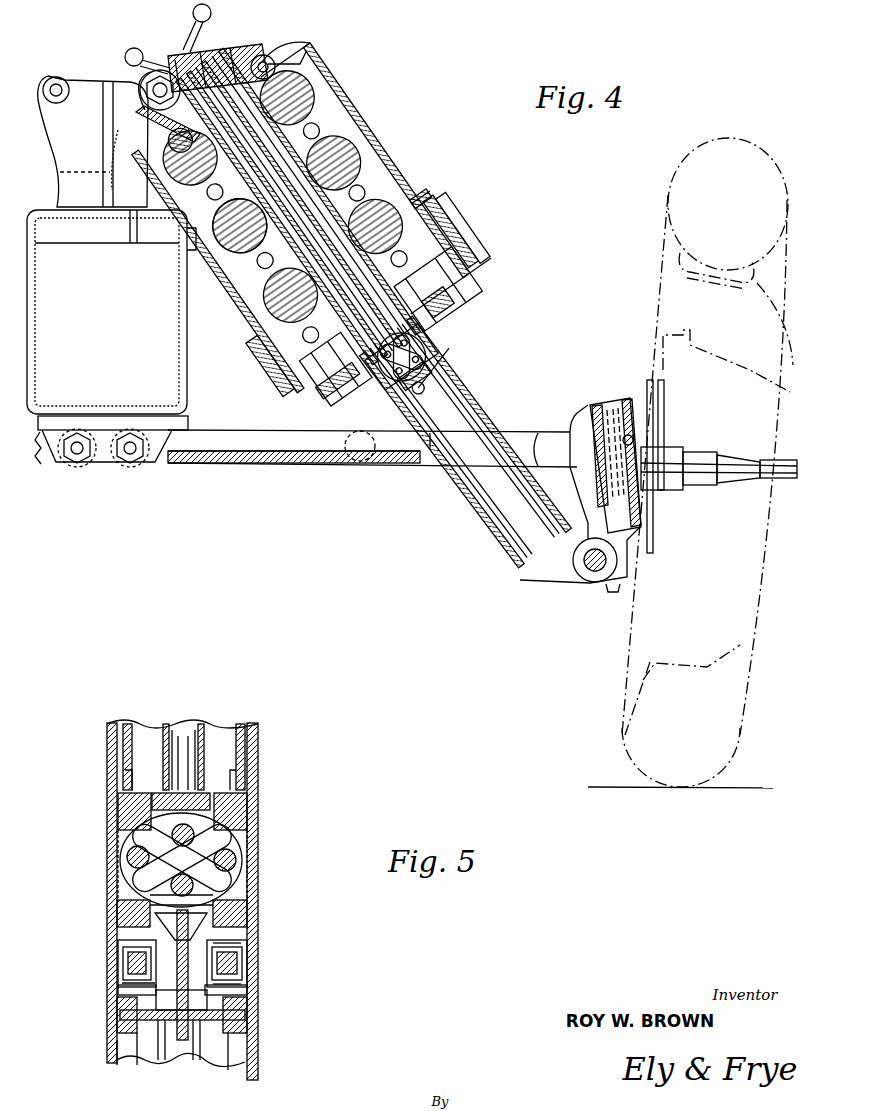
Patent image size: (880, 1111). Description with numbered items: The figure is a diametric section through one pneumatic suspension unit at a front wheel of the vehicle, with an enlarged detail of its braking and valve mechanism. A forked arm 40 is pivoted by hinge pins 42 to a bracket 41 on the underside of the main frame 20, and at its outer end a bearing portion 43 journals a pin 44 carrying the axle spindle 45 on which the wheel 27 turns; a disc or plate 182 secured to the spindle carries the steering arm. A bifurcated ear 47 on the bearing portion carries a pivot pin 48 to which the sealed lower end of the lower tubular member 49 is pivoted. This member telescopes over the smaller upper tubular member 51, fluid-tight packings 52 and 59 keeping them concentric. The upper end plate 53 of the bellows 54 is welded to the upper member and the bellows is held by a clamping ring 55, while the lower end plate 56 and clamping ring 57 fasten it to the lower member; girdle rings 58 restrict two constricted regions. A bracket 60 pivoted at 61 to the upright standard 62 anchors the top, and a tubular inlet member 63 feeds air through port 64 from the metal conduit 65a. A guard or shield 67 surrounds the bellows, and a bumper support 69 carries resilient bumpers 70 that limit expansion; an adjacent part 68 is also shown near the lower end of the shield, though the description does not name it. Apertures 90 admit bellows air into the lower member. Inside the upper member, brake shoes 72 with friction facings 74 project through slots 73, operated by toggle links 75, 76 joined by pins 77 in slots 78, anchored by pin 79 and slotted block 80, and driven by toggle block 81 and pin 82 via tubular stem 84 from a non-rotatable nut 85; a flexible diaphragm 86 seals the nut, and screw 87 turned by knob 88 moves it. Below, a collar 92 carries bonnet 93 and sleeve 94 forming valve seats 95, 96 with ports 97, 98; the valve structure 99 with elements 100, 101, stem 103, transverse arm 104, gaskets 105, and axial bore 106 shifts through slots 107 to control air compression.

In FIG. 4, the main frame 20 is at (188, 372).
In FIG. 4, the wheel 27 is at (660, 287).
In FIG. 4, the forked arm 40 is at (302, 466).
In FIG. 4, the bracket 41 is at (172, 432).
In FIG. 4, the hinge pin 42 is at (77, 458).
In FIG. 4, the bearing portion 43 is at (578, 414).
In FIG. 4, the pin 44 is at (608, 405).
In FIG. 4, the axle spindle 45 is at (760, 482).
In FIG. 4, the bifurcated ear 47 is at (634, 540).
In FIG. 4, the pivot pin 48 is at (587, 575).
In FIG. 4, the lower tubular member 49 is at (462, 498).
In FIG. 5, the lower tubular member 49 is at (258, 755).
In FIG. 4, the upper tubular member 51 is at (305, 168).
In FIG. 5, the upper tubular member 51 is at (240, 724).
In FIG. 4, the fluid-tight packing 52 is at (260, 307).
In FIG. 4, the upper end plate 53 is at (312, 45).
In FIG. 4, the bellows 54 is at (413, 193).
In FIG. 4, the clamping ring 55 is at (278, 63).
In FIG. 4, the lower end plate 56 is at (430, 262).
In FIG. 4, the clamping ring 57 is at (452, 225).
In FIG. 4, the girdle ring 58 is at (320, 125).
In FIG. 4, the fluid-tight packing 59 is at (440, 378).
In FIG. 5, the fluid-tight packing 59 is at (120, 962).
In FIG. 4, the bracket 60 is at (228, 50).
In FIG. 4, the pivotal connection 61 is at (140, 85).
In FIG. 4, the upright standard 62 is at (70, 145).
In FIG. 4, the tubular inlet member 63 is at (108, 128).
In FIG. 4, the port 64 is at (170, 150).
In FIG. 4, the metal conduit 65a is at (62, 174).
In FIG. 4, the guard or shield 67 is at (350, 87).
In FIG. 4, the end block 68 is at (448, 310).
In FIG. 4, the bumper support 69 is at (440, 200).
In FIG. 4, the resilient bumper 70 is at (436, 280).
In FIG. 4, the brake shoe 72 is at (430, 362).
In FIG. 5, the brake shoe 72 is at (118, 888).
In FIG. 5, the slot 73 is at (125, 778).
In FIG. 5, the friction material facing 74 is at (122, 824).
In FIG. 4, the toggle link 75 is at (338, 386).
In FIG. 5, the toggle link 75 is at (140, 846).
In FIG. 4, the toggle link 76 is at (425, 350).
In FIG. 5, the toggle link 76 is at (128, 900).
In FIG. 5, the pin 77 is at (130, 857).
In FIG. 5, the slot 78 is at (118, 868).
In FIG. 5, the pin 79 is at (245, 895).
In FIG. 5, the slotted block 80 is at (237, 915).
In FIG. 5, the toggle block 81 is at (114, 798).
In FIG. 5, the pin 82 is at (247, 814).
In FIG. 4, the tubular stem 84 is at (207, 260).
In FIG. 5, the tubular stem 84 is at (157, 724).
In FIG. 4, the non-rotatable nut 85 is at (216, 204).
In FIG. 4, the flexible diaphragm 86 is at (264, 55).
In FIG. 4, the screw 87 is at (218, 52).
In FIG. 4, the handle or knob 88 is at (170, 55).
In FIG. 4, the aperture 90 is at (300, 334).
In FIG. 5, the collar or plug 92 is at (125, 987).
In FIG. 5, the bonnet 93 is at (150, 926).
In FIG. 5, the tubular sleeve 94 is at (248, 1005).
In FIG. 5, the valve seat 95 is at (122, 943).
In FIG. 5, the valve seat 96 is at (118, 980).
In FIG. 5, the port 97 is at (242, 946).
In FIG. 5, the port 98 is at (250, 981).
In FIG. 5, the valve structure 99 is at (245, 962).
In FIG. 5, the valve element 100 is at (250, 950).
In FIG. 5, the valve element 101 is at (250, 968).
In FIG. 5, the valve stem 103 is at (158, 1062).
In FIG. 5, the transverse arm 104 is at (196, 1062).
In FIG. 4, the arcuate gasket 105 is at (460, 393).
In FIG. 5, the arcuate gasket 105 is at (118, 1030).
In FIG. 5, the axial bore 106 is at (182, 1062).
In FIG. 5, the slot 107 is at (125, 1058).
In FIG. 4, the disc or plate 182 is at (651, 382).